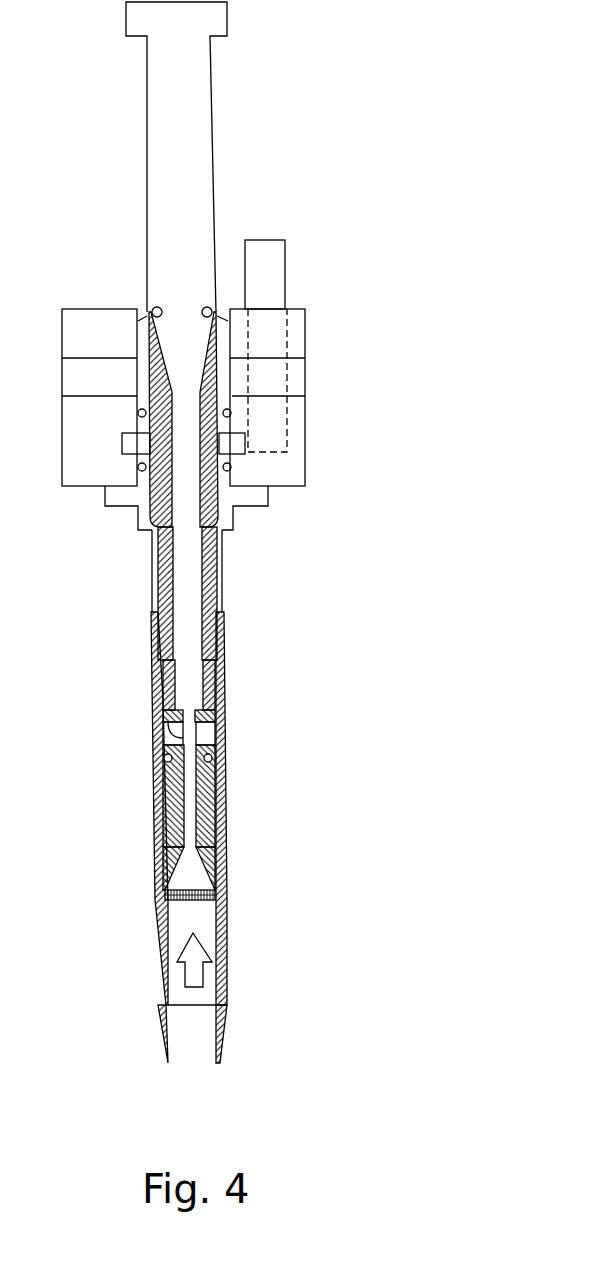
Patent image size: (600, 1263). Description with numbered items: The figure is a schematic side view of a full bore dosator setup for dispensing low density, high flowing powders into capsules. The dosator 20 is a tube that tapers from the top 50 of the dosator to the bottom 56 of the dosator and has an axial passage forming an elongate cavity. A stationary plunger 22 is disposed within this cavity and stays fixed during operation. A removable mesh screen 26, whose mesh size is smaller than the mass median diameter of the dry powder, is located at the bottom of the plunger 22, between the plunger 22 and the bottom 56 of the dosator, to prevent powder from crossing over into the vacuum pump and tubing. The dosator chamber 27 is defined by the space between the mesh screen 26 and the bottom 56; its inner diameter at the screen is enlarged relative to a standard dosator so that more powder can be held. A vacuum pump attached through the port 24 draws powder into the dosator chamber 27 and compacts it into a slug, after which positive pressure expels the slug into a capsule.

The dosator 20 is at (227, 778).
The stationary plunger 22 is at (205, 124).
The port 24 is at (285, 275).
The mesh screen 26 is at (200, 900).
The dosator chamber 27 is at (172, 921).
The top of the dosator 50 is at (150, 310).
The bottom of the dosator 56 is at (220, 1062).